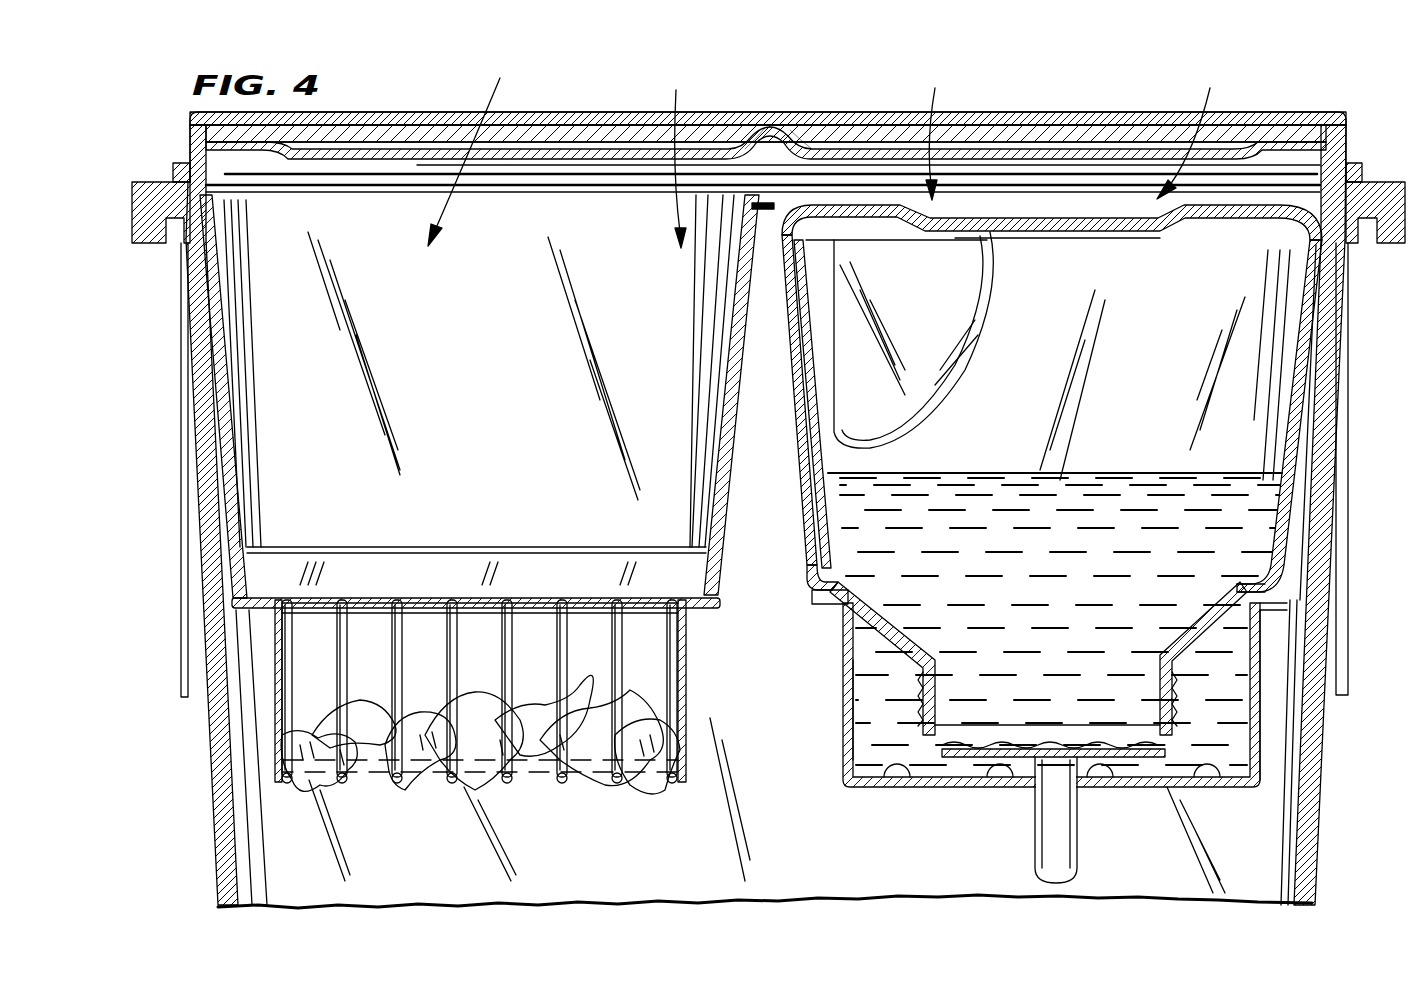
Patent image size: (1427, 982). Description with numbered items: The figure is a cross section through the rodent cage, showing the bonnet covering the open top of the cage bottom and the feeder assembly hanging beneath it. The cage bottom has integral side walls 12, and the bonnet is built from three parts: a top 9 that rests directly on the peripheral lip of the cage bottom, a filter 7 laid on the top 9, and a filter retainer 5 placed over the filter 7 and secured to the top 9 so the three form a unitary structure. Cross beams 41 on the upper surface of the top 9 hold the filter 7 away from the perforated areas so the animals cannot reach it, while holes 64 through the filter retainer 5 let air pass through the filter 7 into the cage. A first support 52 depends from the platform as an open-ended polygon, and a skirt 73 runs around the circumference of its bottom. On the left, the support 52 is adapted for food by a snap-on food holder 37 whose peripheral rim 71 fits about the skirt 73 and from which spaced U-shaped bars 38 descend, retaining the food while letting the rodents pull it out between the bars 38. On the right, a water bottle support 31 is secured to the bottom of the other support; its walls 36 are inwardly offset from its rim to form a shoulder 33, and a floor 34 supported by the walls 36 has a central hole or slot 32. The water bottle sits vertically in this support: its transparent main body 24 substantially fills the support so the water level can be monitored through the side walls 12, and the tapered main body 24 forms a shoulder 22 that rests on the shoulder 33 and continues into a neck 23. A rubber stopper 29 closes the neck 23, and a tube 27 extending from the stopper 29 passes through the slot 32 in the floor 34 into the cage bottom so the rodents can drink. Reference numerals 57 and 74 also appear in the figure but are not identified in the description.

The filter retainer 5 is at (1340, 112).
The filter 7 is at (607, 148).
The top 9 is at (1027, 149).
The side walls 12 is at (216, 829).
The shoulder 22 is at (850, 580).
The neck 23 is at (928, 632).
The main body 24 is at (1240, 378).
The tube 27 is at (1078, 828).
The rubber stopper 29 is at (1158, 788).
The water bottle support 31 is at (1263, 697).
The hole or slot 32 is at (1030, 787).
The shoulder 33 is at (832, 606).
The floor 34 is at (938, 787).
The walls 36 is at (1212, 592).
The food holder 37 is at (276, 706).
The U-shaped bars 38 is at (511, 758).
The cross beams 41 is at (771, 126).
The first support 52 is at (1100, 160).
The rim 57 is at (615, 160).
The holes 64 is at (867, 120).
The rim 71 is at (822, 592).
The skirt 73 is at (813, 550).
The divider foot 74 is at (722, 584).